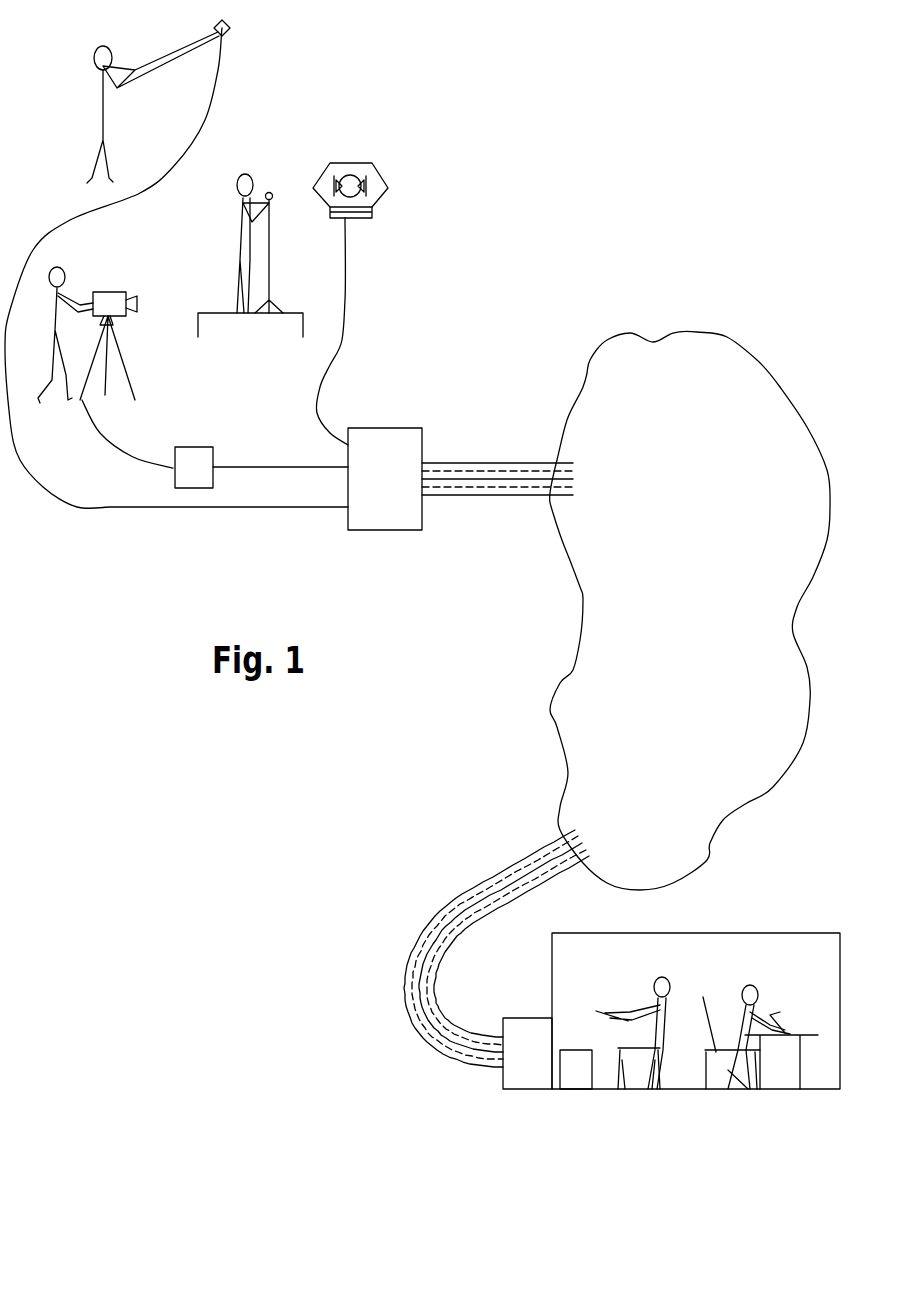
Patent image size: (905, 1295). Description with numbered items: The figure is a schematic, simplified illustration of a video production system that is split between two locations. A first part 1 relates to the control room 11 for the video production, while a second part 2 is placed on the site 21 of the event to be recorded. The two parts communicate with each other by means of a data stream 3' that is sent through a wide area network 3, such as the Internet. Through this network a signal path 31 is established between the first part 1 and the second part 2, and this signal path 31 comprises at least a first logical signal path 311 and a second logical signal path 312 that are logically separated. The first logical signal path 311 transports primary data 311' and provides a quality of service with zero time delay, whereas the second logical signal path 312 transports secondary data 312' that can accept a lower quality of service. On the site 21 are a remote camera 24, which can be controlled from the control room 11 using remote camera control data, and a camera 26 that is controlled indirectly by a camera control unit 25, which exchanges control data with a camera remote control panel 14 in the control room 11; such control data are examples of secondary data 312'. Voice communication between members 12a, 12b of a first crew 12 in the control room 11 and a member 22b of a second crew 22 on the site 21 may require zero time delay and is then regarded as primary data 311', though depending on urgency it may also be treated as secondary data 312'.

The first part 1 is at (520, 1080).
The second part 2 is at (362, 515).
The wide area network 3 is at (690, 610).
The data stream 3' is at (484, 539).
The control room 11 is at (775, 948).
The first crew 12 is at (707, 1023).
The member of first crew 12a is at (740, 997).
The member of first crew 12b is at (670, 997).
The camera remote control panel 14 is at (570, 1073).
The site 21 is at (263, 150).
The second crew 22 is at (57, 88).
The member of second crew 22b is at (62, 267).
The remote camera 24 is at (355, 163).
The camera control unit 25 is at (193, 463).
The camera 26 is at (112, 291).
The signal path 31 is at (489, 464).
The first logical signal path 311 is at (497, 411).
The primary data 311' is at (502, 395).
The second logical signal path 312 is at (497, 541).
The secondary data 312' is at (497, 542).